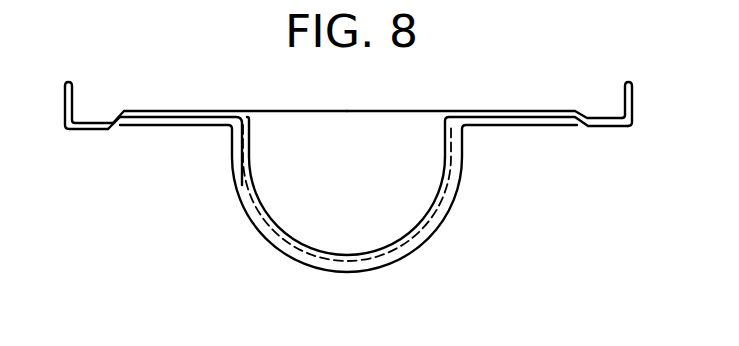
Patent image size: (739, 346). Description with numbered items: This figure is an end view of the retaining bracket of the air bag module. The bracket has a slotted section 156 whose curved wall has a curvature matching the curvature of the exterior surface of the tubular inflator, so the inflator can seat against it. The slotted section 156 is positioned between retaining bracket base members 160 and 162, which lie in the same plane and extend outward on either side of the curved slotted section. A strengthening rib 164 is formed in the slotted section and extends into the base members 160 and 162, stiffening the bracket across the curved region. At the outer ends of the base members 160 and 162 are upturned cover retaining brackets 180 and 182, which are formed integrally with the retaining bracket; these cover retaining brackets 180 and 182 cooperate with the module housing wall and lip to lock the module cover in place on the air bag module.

The slotted section 156 is at (380, 250).
The retaining bracket base member 160 is at (178, 111).
The retaining bracket base member 162 is at (536, 111).
The strengthening rib 164 is at (298, 260).
The cover retaining bracket 180 is at (68, 131).
The cover retaining bracket 182 is at (631, 128).